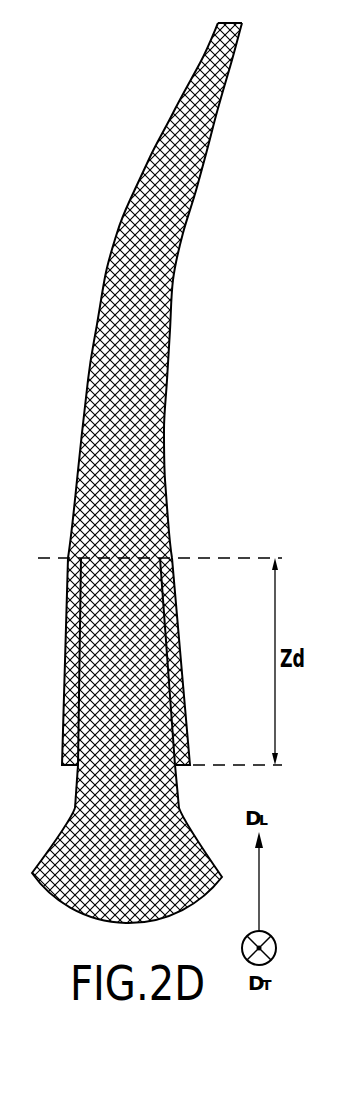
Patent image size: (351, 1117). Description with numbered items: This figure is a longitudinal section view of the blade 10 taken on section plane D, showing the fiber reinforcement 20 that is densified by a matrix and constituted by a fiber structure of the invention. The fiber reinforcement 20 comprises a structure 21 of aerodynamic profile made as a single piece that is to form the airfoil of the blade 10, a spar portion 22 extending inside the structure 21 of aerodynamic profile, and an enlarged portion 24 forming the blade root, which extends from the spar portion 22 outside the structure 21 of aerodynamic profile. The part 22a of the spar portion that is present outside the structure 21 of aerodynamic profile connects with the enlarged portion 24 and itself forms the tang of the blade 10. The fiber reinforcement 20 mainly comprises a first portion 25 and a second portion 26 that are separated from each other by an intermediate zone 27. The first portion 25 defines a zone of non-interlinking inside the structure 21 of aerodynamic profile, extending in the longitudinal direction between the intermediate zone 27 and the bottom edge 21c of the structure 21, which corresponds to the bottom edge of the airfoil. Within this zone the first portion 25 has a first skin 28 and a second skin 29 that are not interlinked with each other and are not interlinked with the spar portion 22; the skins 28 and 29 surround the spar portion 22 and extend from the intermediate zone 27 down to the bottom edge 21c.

The blade 10 is at (175, 568).
The fiber reinforcement 20 is at (127, 290).
The structure of aerodynamic profile 21 is at (152, 313).
The bottom edge of the structure of aerodynamic profile 21c is at (182, 768).
The spar portion 22 is at (125, 760).
The part of the spar portion present outside the structure of aerodynamic profile 22a is at (77, 788).
The enlarged portion 24 is at (182, 896).
The first portion 25 is at (137, 661).
The second portion 26 is at (79, 311).
The intermediate zone 27 is at (212, 558).
The first skin 28 is at (66, 702).
The second skin 29 is at (179, 666).